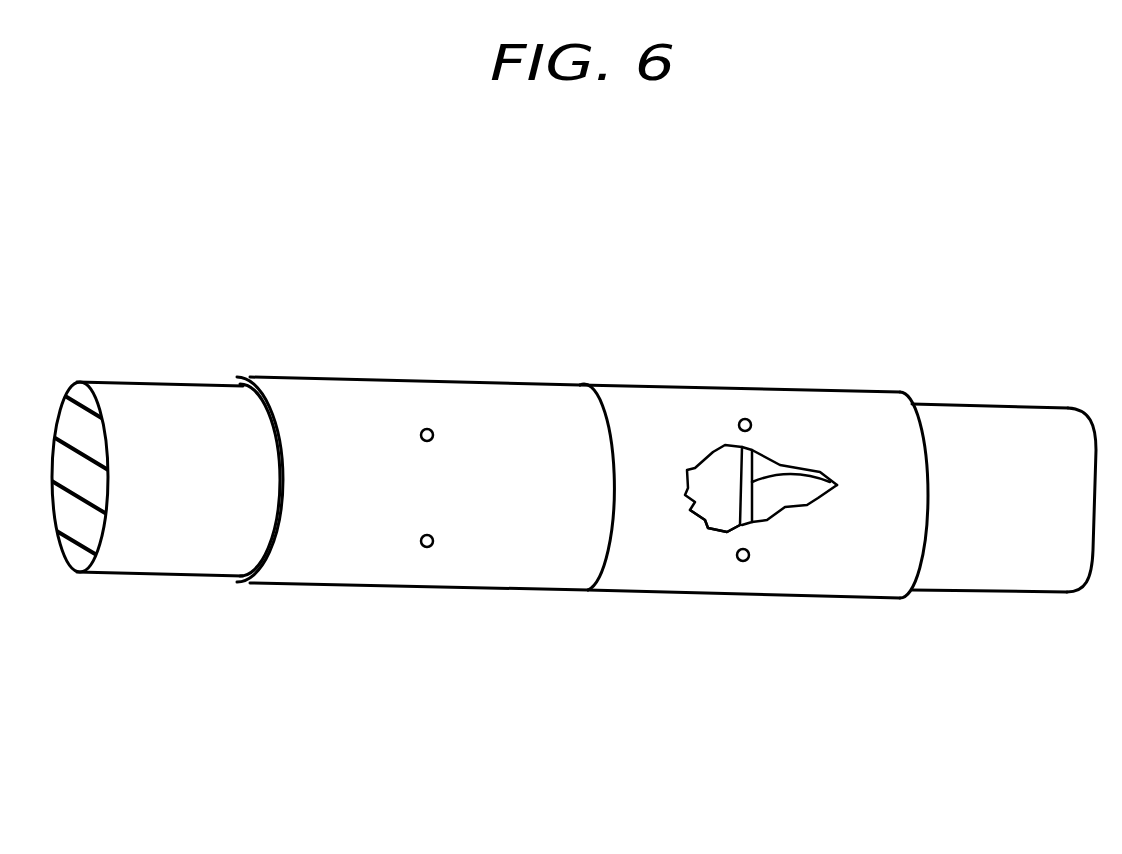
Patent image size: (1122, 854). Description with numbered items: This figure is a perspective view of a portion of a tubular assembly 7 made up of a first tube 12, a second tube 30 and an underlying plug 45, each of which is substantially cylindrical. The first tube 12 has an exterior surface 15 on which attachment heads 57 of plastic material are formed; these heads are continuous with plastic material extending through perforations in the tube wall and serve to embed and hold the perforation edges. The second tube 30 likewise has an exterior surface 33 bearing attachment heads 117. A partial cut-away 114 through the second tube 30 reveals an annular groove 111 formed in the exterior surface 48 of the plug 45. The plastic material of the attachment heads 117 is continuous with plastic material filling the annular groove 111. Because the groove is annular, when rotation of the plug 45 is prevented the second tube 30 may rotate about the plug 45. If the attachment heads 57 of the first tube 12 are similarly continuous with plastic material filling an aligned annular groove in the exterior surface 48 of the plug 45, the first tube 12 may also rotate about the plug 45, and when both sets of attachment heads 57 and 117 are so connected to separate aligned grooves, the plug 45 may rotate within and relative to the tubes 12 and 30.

The tubular assembly 7 is at (398, 680).
The first tube 12 is at (310, 385).
The exterior surface 15 is at (300, 590).
The second tube 30 is at (613, 390).
The exterior surface 33 is at (640, 592).
The plug 45 is at (183, 390).
The exterior surface 48 is at (163, 573).
The attachment head 57 is at (420, 433).
The annular groove 111 is at (822, 477).
The partial cut-away 114 is at (807, 505).
The attachment heads 117 is at (753, 423).